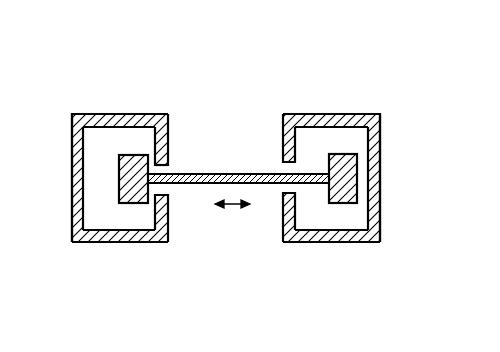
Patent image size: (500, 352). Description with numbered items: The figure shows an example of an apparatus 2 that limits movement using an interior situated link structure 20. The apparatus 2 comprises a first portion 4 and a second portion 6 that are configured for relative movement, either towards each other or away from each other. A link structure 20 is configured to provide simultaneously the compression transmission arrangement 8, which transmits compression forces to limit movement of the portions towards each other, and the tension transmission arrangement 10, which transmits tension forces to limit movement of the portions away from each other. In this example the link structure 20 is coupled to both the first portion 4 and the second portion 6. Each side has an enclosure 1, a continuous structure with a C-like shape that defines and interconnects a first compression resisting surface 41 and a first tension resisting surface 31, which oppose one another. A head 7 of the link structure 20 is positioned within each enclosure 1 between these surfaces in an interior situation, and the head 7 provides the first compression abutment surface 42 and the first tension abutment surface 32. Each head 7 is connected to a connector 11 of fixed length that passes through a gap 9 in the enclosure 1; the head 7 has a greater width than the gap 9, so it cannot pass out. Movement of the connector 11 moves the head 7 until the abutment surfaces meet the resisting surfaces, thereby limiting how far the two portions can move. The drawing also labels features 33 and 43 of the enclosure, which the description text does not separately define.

The enclosure 1 is at (94, 114).
The apparatus 2 is at (402, 67).
The first portion 4 is at (103, 235).
The second portion 6 is at (352, 243).
The head 7 is at (130, 194).
The compression transmission arrangement 8 is at (258, 184).
The gap 9 is at (163, 169).
The tension transmission arrangement 10 is at (275, 184).
The connector 11 is at (256, 172).
The link structure 20 is at (226, 172).
The first tension resisting surface 31 is at (153, 133).
The first tension abutment surface 32 is at (168, 204).
The opening 33 is at (153, 162).
The first compression resisting surface 41 is at (88, 160).
The first compression abutment surface 42 is at (73, 215).
The accommodating space 43 is at (105, 158).